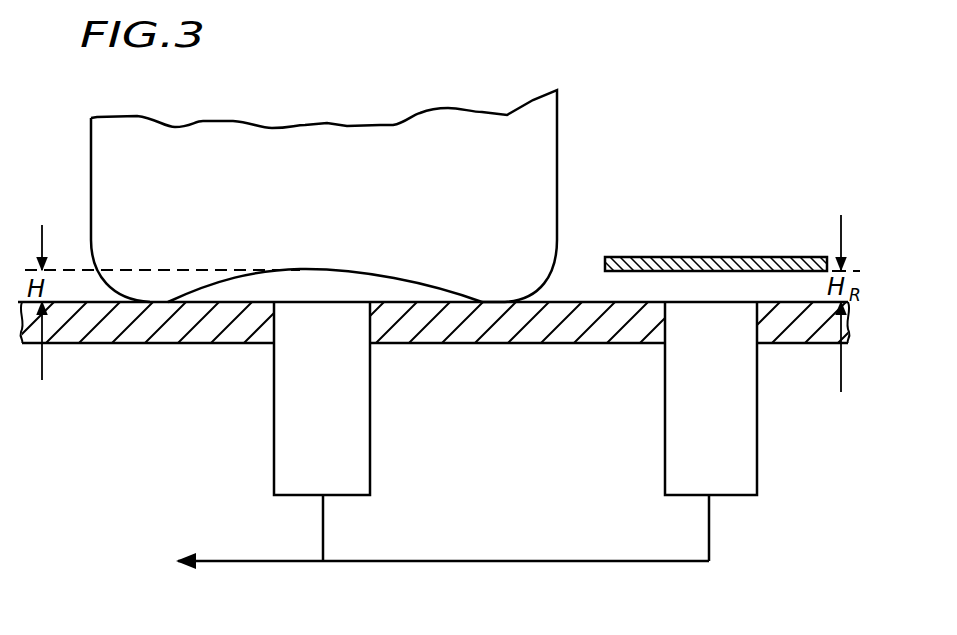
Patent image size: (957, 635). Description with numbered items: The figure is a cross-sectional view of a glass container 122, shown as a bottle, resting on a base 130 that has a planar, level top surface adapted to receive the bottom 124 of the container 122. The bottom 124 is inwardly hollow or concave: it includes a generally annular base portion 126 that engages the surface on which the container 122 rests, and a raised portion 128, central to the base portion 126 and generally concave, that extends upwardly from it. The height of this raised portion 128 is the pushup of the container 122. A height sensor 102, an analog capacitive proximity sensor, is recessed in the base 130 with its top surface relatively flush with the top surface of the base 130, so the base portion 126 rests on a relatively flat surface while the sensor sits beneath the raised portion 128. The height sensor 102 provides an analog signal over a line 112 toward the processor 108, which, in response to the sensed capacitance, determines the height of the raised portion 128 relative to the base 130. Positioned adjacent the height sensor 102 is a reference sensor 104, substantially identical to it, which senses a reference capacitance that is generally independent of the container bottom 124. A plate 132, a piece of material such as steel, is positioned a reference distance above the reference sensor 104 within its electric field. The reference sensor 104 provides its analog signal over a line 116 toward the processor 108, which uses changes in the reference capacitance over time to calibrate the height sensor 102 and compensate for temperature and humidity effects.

The height sensor 102 is at (370, 425).
The reference sensor 104 is at (665, 383).
The processor 108 is at (108, 619).
The line 112 is at (323, 537).
The line 116 is at (709, 520).
The glass container 122 is at (557, 147).
The bottom 124 is at (450, 248).
The base portion 126 is at (497, 300).
The raised portion 128 is at (343, 268).
The base 130 is at (572, 300).
The plate 132 is at (668, 258).